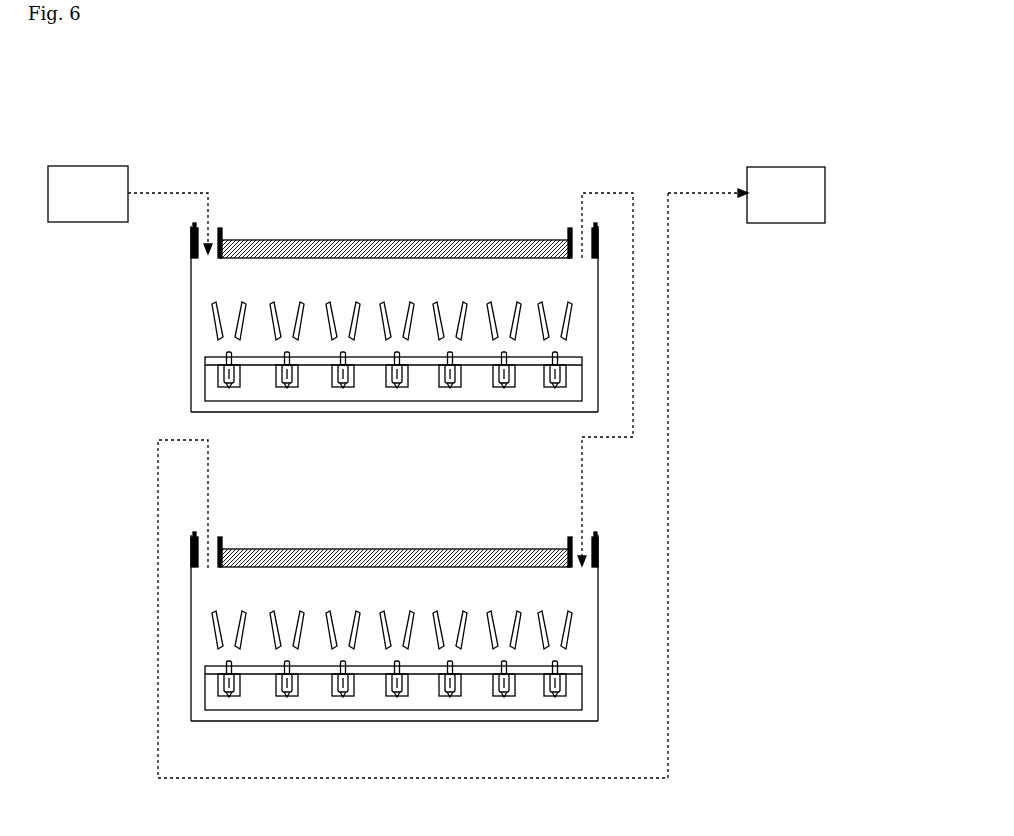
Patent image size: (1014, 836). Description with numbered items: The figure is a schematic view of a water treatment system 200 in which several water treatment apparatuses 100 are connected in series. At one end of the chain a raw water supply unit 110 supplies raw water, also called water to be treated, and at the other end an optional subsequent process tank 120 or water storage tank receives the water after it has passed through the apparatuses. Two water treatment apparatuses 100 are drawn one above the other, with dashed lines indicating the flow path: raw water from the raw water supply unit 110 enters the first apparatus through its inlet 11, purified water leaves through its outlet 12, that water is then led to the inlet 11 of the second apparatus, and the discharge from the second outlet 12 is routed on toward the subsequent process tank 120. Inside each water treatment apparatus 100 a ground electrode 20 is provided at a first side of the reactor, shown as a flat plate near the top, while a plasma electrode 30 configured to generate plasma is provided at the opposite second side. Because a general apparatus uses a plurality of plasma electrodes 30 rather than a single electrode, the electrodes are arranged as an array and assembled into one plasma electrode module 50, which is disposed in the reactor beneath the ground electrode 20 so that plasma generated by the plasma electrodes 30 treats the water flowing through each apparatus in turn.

The water treatment system 200 is at (615, 71).
The raw water supply unit 110 is at (85, 166).
The subsequent process tank 120 is at (784, 167).
The water treatment apparatus 100 is at (598, 300).
The ground electrode 20 is at (518, 240).
The plasma electrode module 50 is at (313, 401).
The plasma electrode 30 is at (565, 375).
The inlet 11 is at (219, 228).
The outlet 12 is at (570, 228).